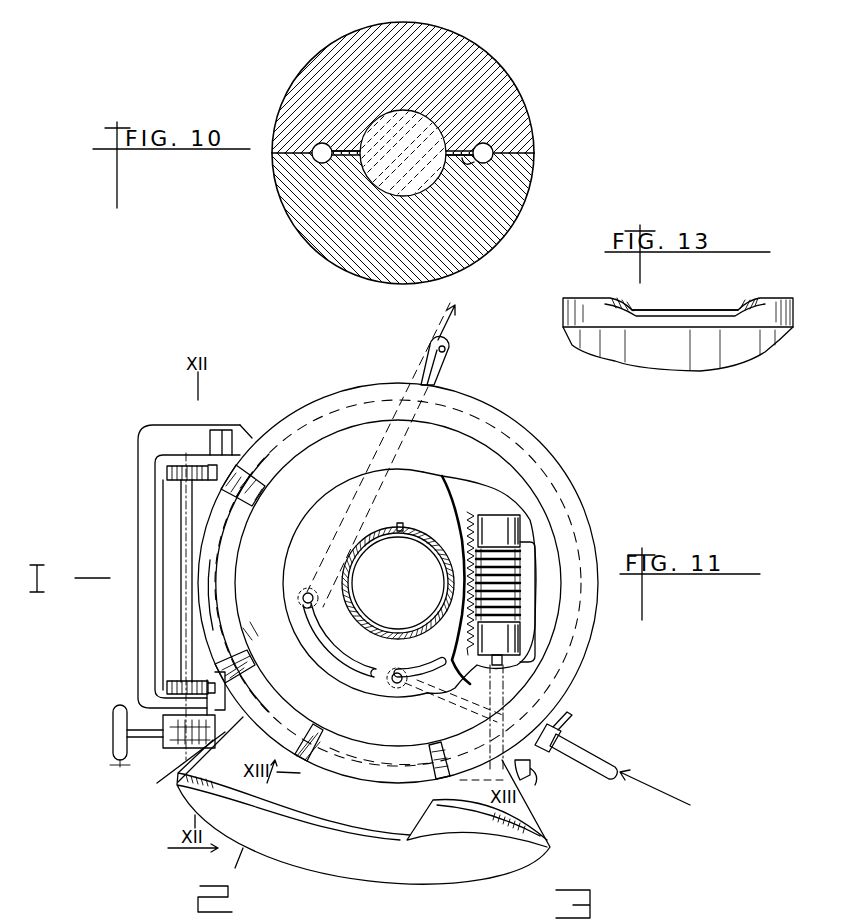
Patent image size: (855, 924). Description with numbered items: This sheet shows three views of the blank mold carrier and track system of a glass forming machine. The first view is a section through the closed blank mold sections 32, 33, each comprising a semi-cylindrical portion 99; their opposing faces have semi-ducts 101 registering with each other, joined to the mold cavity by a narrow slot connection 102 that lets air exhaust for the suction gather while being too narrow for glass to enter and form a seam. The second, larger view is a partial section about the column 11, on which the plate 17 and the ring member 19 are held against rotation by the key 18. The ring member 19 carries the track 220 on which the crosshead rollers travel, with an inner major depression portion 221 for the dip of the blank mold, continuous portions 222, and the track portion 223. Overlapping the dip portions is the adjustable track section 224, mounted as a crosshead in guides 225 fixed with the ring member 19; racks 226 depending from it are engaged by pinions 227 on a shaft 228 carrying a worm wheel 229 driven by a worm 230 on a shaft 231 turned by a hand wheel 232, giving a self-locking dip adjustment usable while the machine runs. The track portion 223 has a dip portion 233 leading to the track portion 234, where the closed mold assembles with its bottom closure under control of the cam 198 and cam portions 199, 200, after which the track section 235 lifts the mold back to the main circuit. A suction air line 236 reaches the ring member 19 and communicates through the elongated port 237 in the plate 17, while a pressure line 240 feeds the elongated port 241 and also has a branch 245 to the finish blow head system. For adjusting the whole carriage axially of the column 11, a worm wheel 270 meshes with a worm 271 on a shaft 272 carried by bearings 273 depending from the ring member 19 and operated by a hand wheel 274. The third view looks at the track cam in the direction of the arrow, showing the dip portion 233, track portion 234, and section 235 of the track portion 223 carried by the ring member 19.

In FIG. 11, the column 11 is at (395, 632).
In FIG. 11, the plate 17 is at (316, 505).
In FIG. 11, the key 18 is at (401, 523).
In FIG. 13, the ring member 19 is at (690, 360).
In FIG. 11, the ring member 19 is at (492, 466).
In FIG. 10, the blank mold section 32 is at (497, 246).
In FIG. 10, the blank mold section 33 is at (525, 110).
In FIG. 10, the semi-cylindrical portion 99 is at (342, 215).
In FIG. 10, the semi-duct 101 is at (313, 158).
In FIG. 10, the slot connection 102 is at (345, 156).
In FIG. 11, the cam 198 is at (169, 761).
In FIG. 11, the cam portion 199 is at (333, 825).
In FIG. 11, the cam portion 200 is at (420, 832).
In FIG. 11, the track 220 is at (470, 402).
In FIG. 11, the inner major depression portion 221 is at (222, 570).
In FIG. 11, the track portions 222 is at (246, 498).
In FIG. 13, the track portion 223 is at (608, 296).
In FIG. 11, the track portion 223 is at (245, 668).
In FIG. 11, the track section 224 is at (208, 600).
In FIG. 11, the guides 225 is at (244, 427).
In FIG. 11, the racks 226 is at (214, 462).
In FIG. 11, the pinions 227 is at (210, 470).
In FIG. 11, the shaft 228 is at (182, 497).
In FIG. 11, the worm wheel 229 is at (215, 724).
In FIG. 11, the worm 230 is at (190, 747).
In FIG. 11, the shaft 231 is at (118, 767).
In FIG. 11, the hand wheel 232 is at (113, 745).
In FIG. 13, the dip portion 233 is at (632, 306).
In FIG. 11, the dip portion 233 is at (318, 738).
In FIG. 13, the track portion 234 is at (707, 306).
In FIG. 11, the track portion 234 is at (380, 764).
In FIG. 13, the track section 235 is at (748, 302).
In FIG. 11, the track section 235 is at (438, 745).
In FIG. 11, the suction air line 236 is at (449, 348).
In FIG. 11, the elongated port 237 is at (376, 670).
In FIG. 11, the pressure line 240 is at (585, 755).
In FIG. 11, the elongated port 241 is at (395, 683).
In FIG. 11, the branch 245 is at (566, 718).
In FIG. 11, the worm wheel 270 is at (466, 522).
In FIG. 11, the worm 271 is at (498, 572).
In FIG. 11, the shaft 272 is at (500, 664).
In FIG. 11, the bearings 273 is at (500, 520).
In FIG. 11, the hand wheel 274 is at (535, 787).